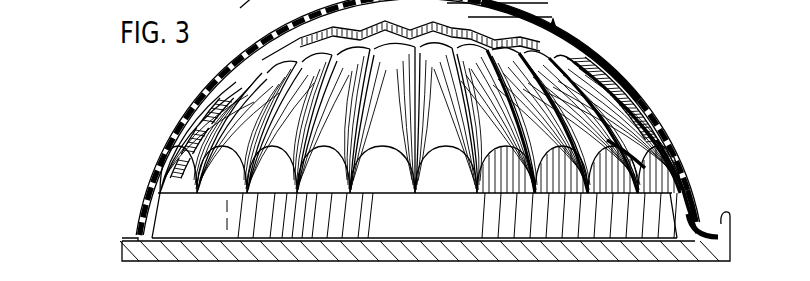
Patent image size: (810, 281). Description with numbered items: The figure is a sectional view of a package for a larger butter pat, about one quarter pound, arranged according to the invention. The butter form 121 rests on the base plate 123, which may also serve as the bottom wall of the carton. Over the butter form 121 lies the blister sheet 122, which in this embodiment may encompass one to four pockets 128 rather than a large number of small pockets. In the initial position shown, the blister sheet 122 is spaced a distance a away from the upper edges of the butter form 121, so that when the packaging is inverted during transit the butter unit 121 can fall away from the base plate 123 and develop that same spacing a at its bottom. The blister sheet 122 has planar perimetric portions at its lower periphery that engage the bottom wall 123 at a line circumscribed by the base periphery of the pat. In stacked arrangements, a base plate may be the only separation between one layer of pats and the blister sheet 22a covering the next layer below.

The blister sheet 122 is at (614, 65).
The butter form 121 is at (630, 93).
The pocket 128 is at (662, 146).
The base plate 123 is at (124, 248).
The blister sheet 22a is at (236, 5).
The spacing a is at (511, 16).